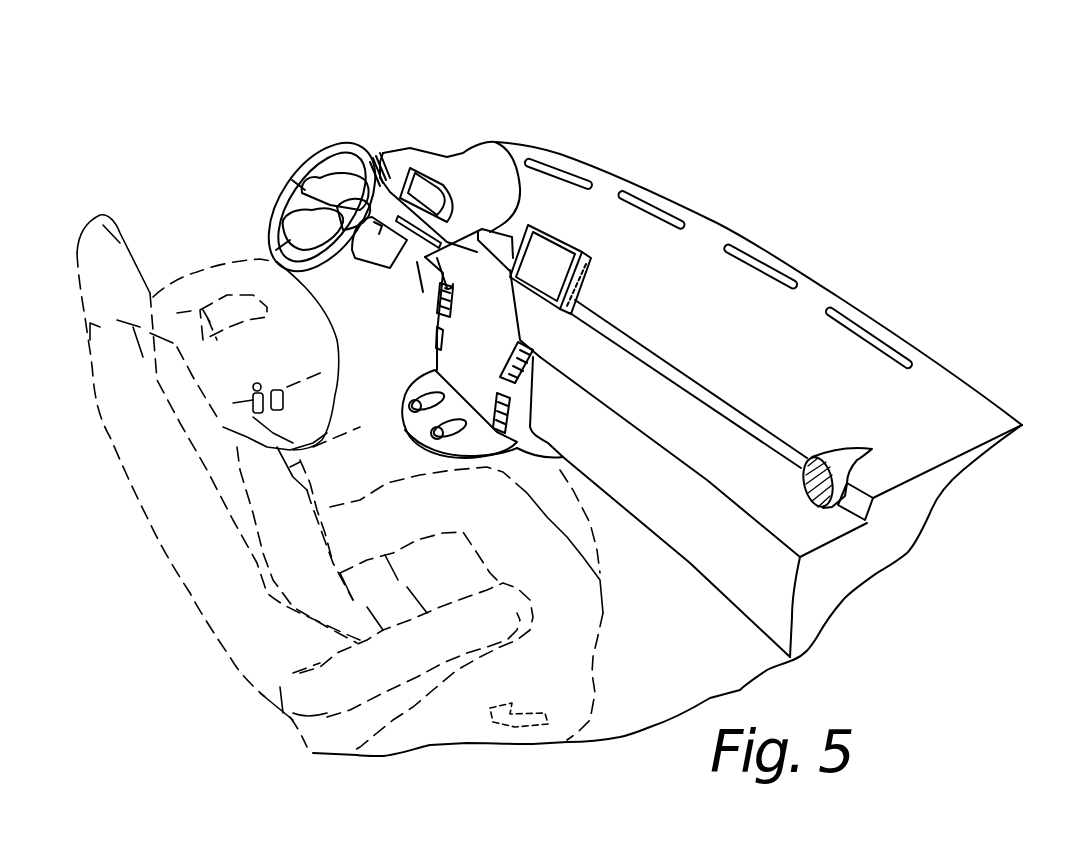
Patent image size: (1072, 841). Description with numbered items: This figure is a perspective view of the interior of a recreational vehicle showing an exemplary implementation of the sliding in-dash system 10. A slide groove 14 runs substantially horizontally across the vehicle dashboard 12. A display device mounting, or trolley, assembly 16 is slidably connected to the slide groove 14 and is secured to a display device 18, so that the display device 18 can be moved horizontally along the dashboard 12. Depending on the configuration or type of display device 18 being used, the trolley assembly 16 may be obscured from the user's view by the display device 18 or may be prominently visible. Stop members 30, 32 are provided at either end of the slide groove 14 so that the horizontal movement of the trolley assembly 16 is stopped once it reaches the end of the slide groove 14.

The sliding in-dash system 10 is at (539, 107).
The vehicle dashboard 12 is at (929, 388).
The slide groove 14 is at (733, 421).
The trolley assembly 16 is at (588, 260).
The display device 18 is at (541, 257).
The stop member at end of slide groove 30 is at (495, 233).
The stop member at end of slide groove 32 is at (785, 455).